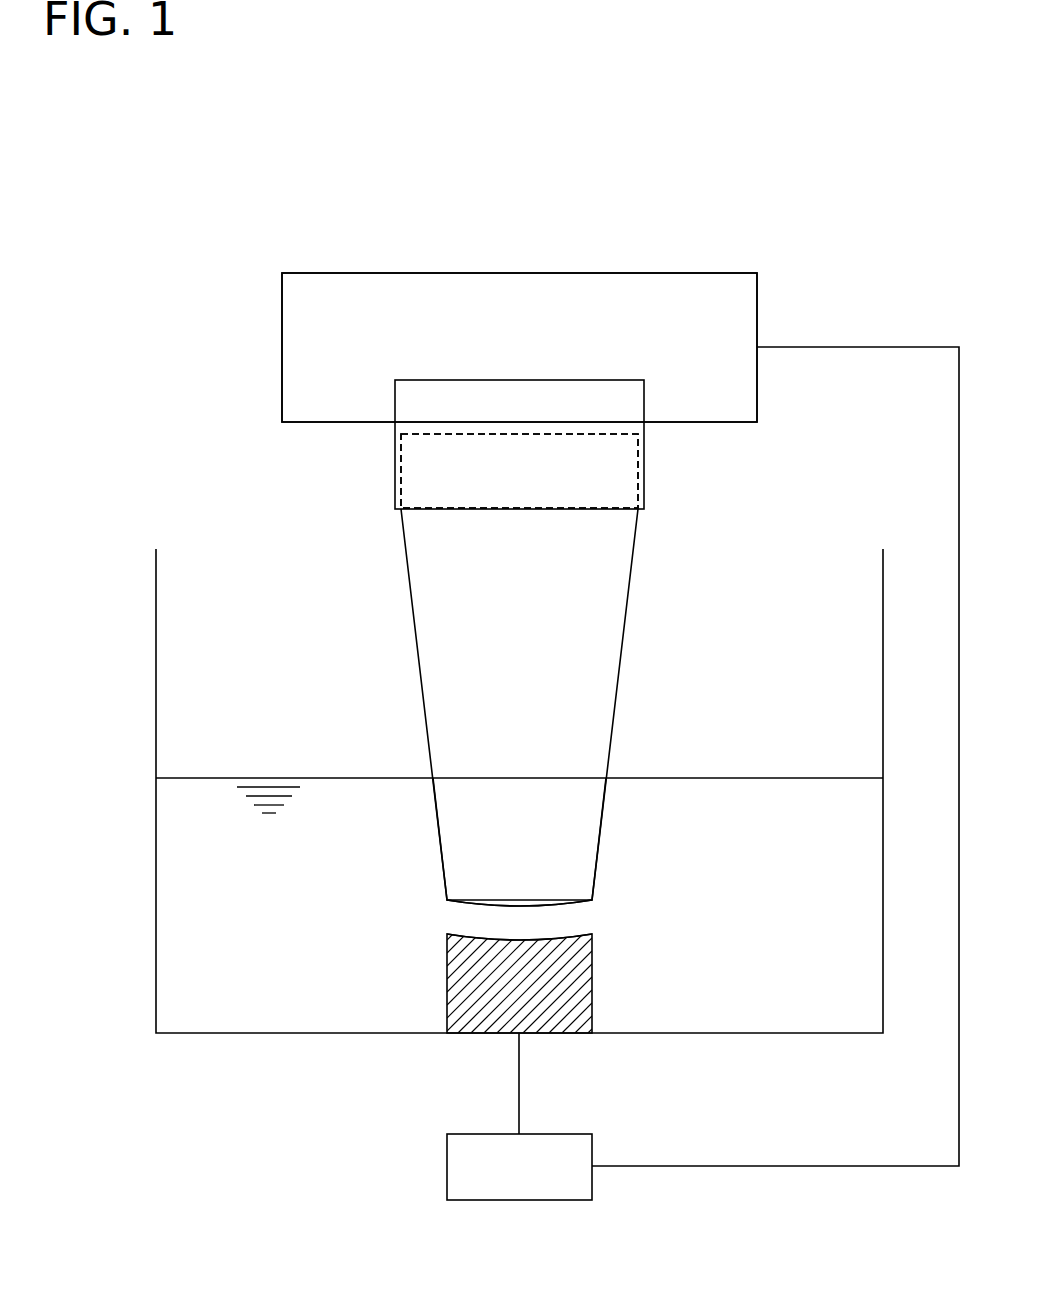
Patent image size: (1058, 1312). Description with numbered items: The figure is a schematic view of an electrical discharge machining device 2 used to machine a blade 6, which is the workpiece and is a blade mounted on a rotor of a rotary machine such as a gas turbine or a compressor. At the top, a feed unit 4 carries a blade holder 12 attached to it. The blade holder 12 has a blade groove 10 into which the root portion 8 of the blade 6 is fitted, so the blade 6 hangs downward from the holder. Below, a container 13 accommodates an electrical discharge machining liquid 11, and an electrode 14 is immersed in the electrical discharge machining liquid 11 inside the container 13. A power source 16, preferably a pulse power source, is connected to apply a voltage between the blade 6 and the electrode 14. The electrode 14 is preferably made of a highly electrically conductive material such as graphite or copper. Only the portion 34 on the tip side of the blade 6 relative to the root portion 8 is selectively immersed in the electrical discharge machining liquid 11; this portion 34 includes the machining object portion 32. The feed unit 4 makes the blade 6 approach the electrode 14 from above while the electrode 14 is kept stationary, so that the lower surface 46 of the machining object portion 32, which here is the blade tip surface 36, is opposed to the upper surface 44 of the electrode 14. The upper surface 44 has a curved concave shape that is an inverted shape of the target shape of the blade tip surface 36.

The electrical discharge machining device 2 is at (747, 158).
The feed unit 4 is at (648, 273).
The blade 6 is at (625, 632).
The root portion 8 is at (475, 473).
The blade groove 10 is at (454, 435).
The electrical discharge machining liquid 11 is at (835, 836).
The blade holder 12 is at (645, 475).
The container 13 is at (884, 652).
The electrode 14 is at (593, 984).
The power source 16 is at (517, 1203).
The machining object portion 32 is at (570, 906).
The portion 34 is at (580, 836).
The blade tip surface 36 is at (470, 906).
The upper surface 44 is at (560, 934).
The lower surface 46 is at (483, 910).